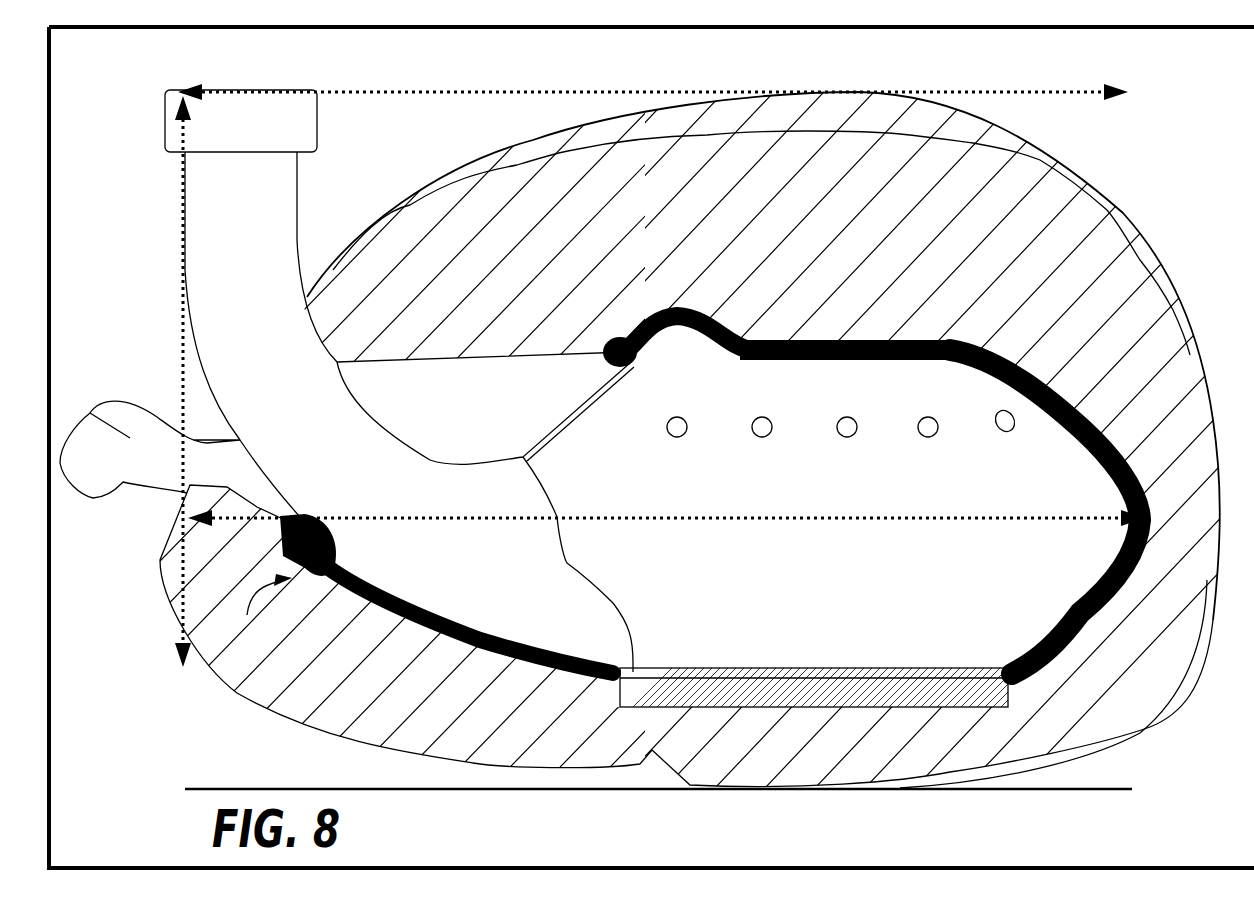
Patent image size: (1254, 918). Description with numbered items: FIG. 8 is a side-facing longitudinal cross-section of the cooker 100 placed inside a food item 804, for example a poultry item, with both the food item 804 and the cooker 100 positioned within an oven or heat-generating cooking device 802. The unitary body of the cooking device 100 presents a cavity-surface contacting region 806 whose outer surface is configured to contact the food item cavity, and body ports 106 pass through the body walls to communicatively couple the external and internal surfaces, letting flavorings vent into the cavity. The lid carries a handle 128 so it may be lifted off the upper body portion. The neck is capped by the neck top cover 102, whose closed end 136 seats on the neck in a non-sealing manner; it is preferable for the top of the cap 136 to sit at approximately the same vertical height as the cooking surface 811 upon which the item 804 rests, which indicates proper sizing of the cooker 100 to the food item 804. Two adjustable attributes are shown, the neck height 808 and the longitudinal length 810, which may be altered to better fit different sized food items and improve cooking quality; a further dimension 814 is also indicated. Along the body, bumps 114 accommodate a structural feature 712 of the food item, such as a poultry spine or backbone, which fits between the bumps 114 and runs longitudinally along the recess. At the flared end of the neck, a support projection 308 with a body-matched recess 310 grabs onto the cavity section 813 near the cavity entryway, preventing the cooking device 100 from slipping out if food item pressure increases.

The cooker 100 is at (640, 480).
The neck top cover 102 is at (317, 100).
The body ports 106 is at (670, 445).
The bumps 114 is at (1020, 670).
The handle 128 is at (707, 318).
The closed end of the top 136 is at (668, 89).
The support projection 308 is at (353, 613).
The body-matched recess 310 is at (293, 557).
The structural feature 712 is at (905, 707).
The heat-generating cooking device 802 is at (52, 117).
The food item 804 is at (1057, 177).
The cavity-surface contacting region 806 is at (1037, 656).
The neck height 808 is at (183, 583).
The longitudinal length 810 is at (480, 518).
The cooking surface 811 is at (960, 792).
The cavity section 813 is at (263, 613).
The dimension end 814 is at (1037, 93).